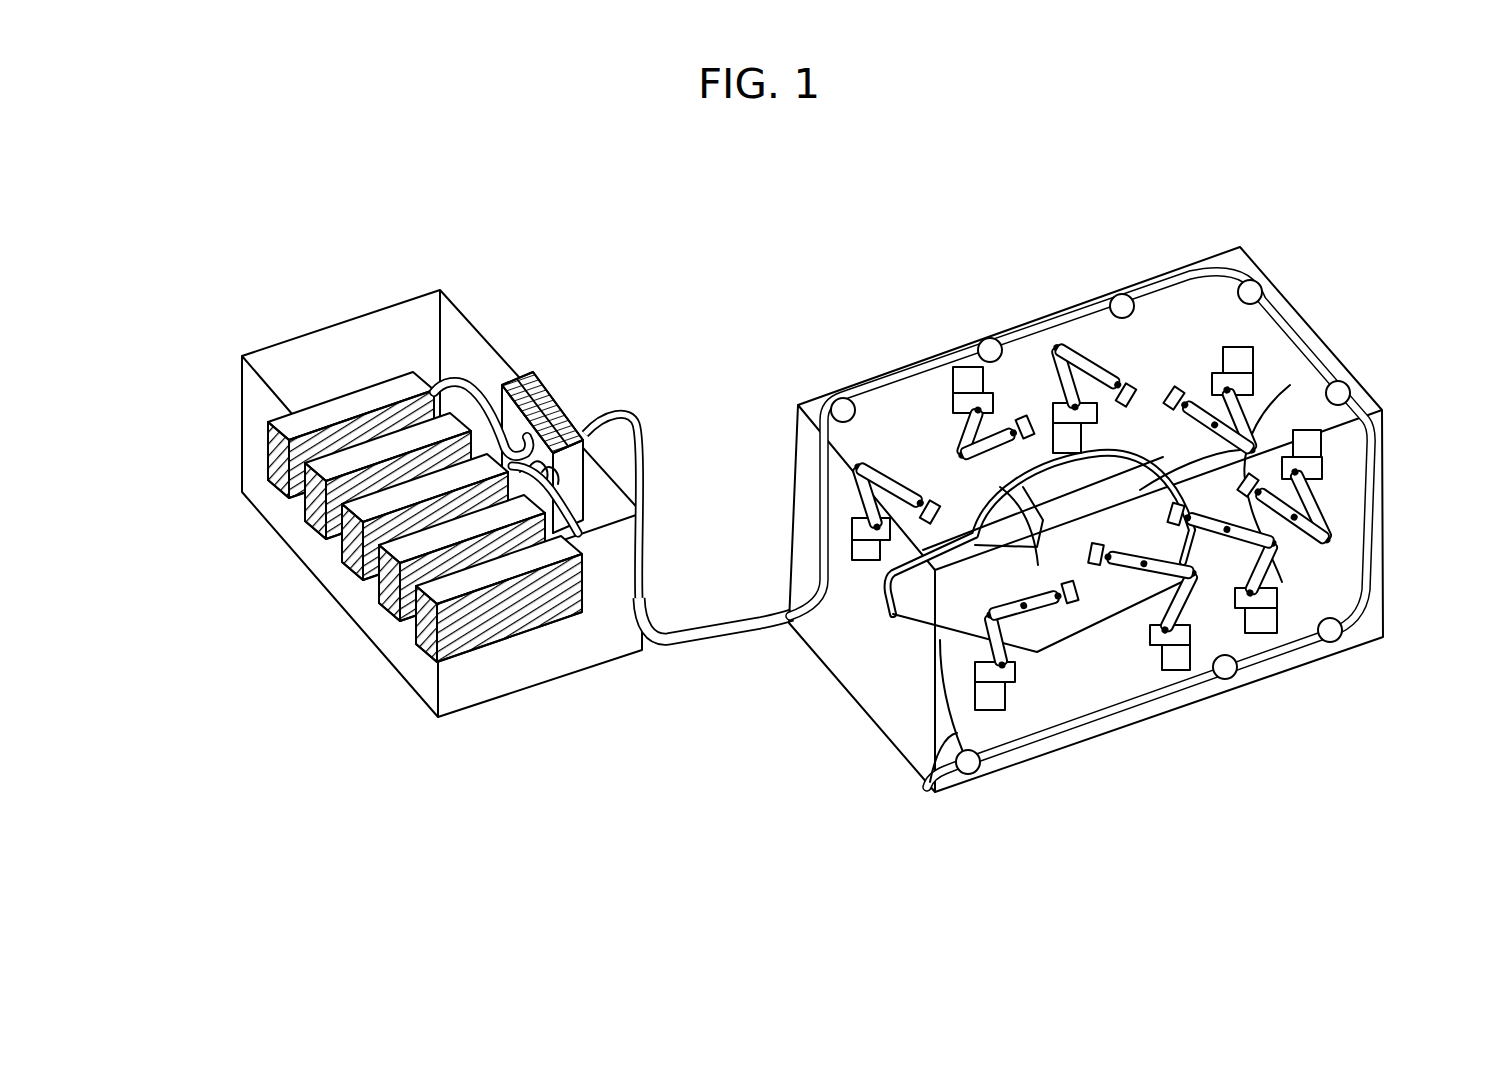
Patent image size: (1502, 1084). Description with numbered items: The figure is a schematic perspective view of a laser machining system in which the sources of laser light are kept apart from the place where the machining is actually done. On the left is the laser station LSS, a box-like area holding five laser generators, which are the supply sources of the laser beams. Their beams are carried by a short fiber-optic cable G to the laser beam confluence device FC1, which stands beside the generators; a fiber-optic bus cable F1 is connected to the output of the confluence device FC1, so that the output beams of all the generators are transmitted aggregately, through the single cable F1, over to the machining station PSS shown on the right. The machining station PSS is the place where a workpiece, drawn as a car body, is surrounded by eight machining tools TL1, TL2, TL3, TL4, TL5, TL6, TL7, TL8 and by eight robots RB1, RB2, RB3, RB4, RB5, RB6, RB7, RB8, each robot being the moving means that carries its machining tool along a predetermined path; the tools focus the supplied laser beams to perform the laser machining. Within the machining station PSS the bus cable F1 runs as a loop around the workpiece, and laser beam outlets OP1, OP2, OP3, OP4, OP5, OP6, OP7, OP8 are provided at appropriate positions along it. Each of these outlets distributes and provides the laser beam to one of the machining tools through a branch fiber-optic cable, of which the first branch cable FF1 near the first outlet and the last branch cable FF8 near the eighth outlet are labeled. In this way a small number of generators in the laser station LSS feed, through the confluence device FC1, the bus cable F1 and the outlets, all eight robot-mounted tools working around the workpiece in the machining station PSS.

The short fiber-optic cable G is at (459, 390).
The laser beam confluence device FC1 is at (545, 381).
The laser station LSS is at (472, 736).
The fiber-optic cable (bus cable) F1 is at (722, 632).
The machining station PSS is at (862, 738).
The branch fiber-optic cable FF1 is at (875, 378).
The branch fiber-optic cable FF8 is at (926, 784).
The laser beam outlet OP1 is at (840, 403).
The laser beam outlet OP2 is at (990, 338).
The laser beam outlet OP3 is at (1128, 294).
The laser beam outlet OP4 is at (1263, 282).
The laser beam outlet OP5 is at (1350, 395).
The laser beam outlet OP6 is at (1343, 640).
The laser beam outlet OP7 is at (1233, 678).
The laser beam outlet OP8 is at (972, 775).
The robot RB1 is at (870, 525).
The robot RB2 is at (963, 377).
The robot RB3 is at (1070, 350).
The robot RB4 is at (1243, 383).
The robot RB5 is at (1305, 485).
The robot RB6 is at (1260, 622).
The robot RB7 is at (1177, 660).
The robot RB8 is at (995, 700).
The machining tool TL1 is at (930, 493).
The machining tool TL2 is at (1013, 397).
The machining tool TL3 is at (1163, 367).
The machining tool TL4 is at (1240, 255).
The machining tool TL5 is at (1325, 480).
The machining tool TL6 is at (1148, 485).
The machining tool TL7 is at (1098, 567).
The machining tool TL8 is at (1072, 603).